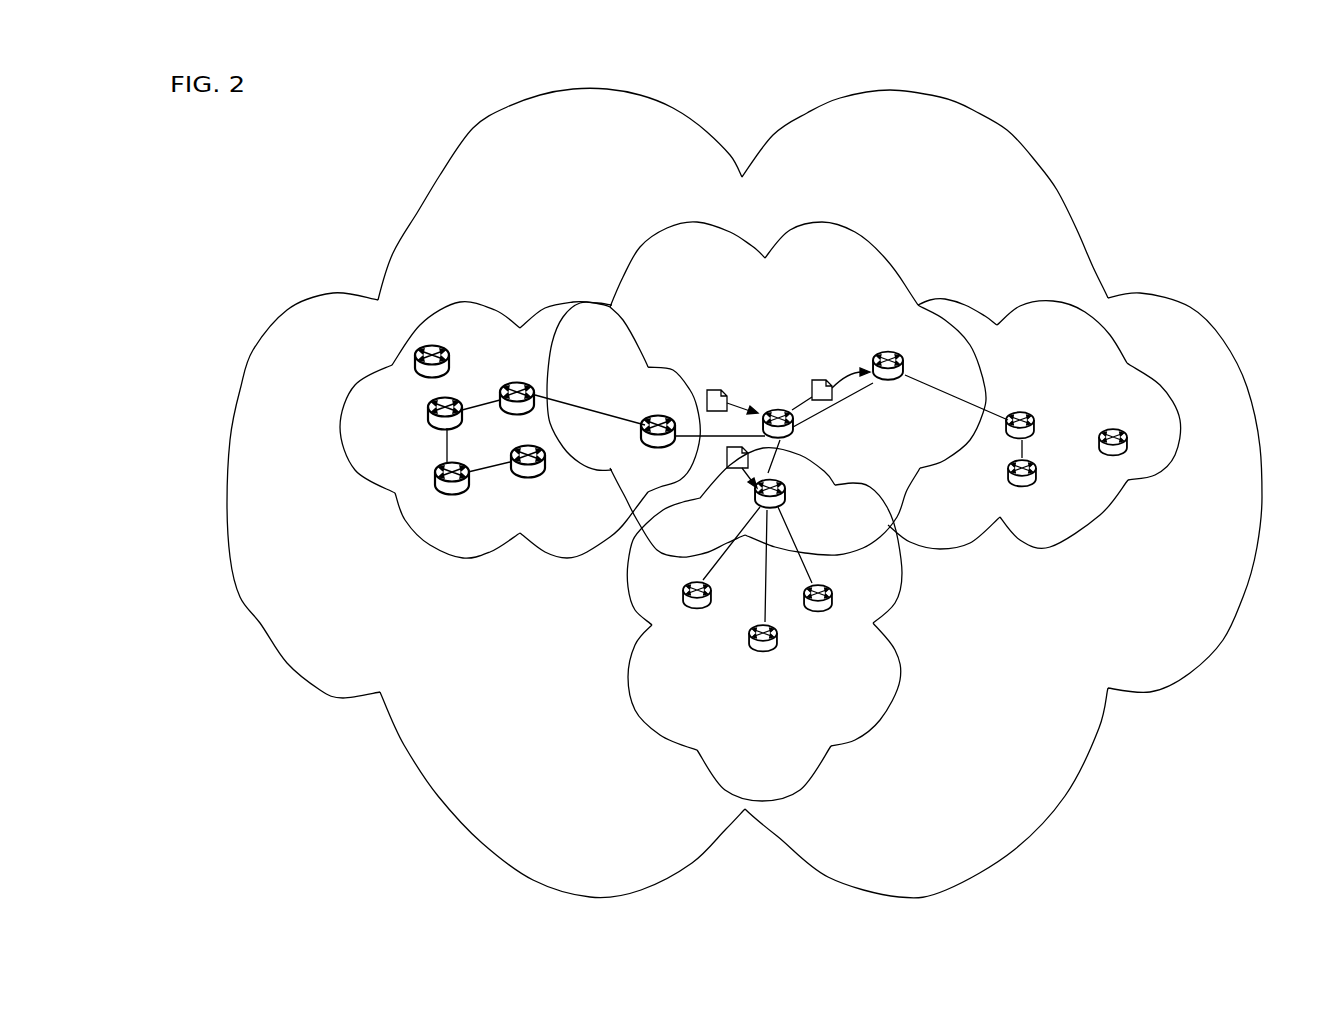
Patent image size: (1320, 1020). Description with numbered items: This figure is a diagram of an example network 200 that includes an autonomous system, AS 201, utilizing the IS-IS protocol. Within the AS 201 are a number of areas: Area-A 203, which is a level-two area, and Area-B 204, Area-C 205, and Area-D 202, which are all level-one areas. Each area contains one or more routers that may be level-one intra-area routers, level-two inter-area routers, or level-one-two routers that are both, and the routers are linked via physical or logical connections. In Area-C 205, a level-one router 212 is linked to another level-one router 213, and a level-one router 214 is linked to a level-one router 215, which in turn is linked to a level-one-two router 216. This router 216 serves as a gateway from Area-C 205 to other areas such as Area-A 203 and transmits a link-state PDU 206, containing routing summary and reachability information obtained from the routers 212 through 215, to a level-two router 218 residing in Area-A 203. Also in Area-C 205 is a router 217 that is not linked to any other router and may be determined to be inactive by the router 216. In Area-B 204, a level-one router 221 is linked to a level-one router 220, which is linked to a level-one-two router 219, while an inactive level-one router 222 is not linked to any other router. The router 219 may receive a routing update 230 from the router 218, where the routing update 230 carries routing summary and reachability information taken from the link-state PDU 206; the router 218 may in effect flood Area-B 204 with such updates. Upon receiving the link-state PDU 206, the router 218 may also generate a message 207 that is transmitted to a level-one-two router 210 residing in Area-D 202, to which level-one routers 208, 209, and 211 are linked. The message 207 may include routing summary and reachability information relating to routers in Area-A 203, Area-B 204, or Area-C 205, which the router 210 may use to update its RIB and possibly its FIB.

The network 200 is at (1277, 120).
The AS 201 is at (744, 493).
The Area-D 202 is at (789, 624).
The Area-A 203 is at (766, 369).
The Area-B 204 is at (1034, 461).
The Area-C 205 is at (520, 404).
The link-state PDU 206 is at (614, 272).
The message 207 is at (735, 470).
The level-1 router 208 is at (707, 623).
The level-1 router 209 is at (765, 673).
The level-1-2 router 210 is at (801, 510).
The level-1 router 211 is at (827, 629).
The level-1 router 212 is at (531, 484).
The level-1 router 213 is at (457, 505).
The level-1 router 214 is at (425, 431).
The level-1 router 215 is at (503, 376).
The level-1-2 router 216 is at (636, 403).
The router 217 is at (415, 383).
The level-2 router 218 is at (766, 393).
The level-1-2 router 219 is at (920, 370).
The level-1 router 220 is at (1042, 404).
The level-1 router 221 is at (1031, 498).
The inactive level-1 router 222 is at (1102, 467).
The routing update 230 is at (824, 352).